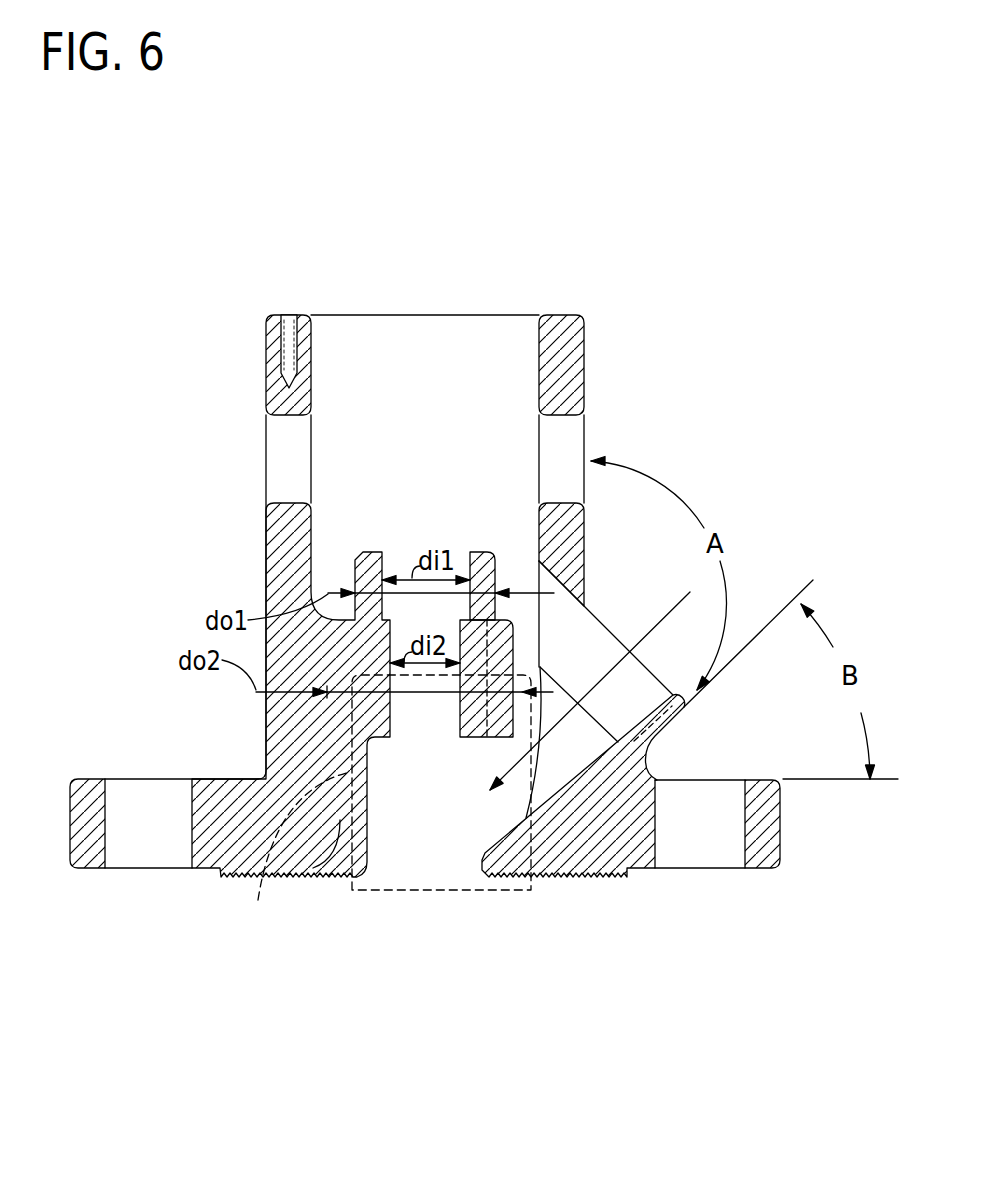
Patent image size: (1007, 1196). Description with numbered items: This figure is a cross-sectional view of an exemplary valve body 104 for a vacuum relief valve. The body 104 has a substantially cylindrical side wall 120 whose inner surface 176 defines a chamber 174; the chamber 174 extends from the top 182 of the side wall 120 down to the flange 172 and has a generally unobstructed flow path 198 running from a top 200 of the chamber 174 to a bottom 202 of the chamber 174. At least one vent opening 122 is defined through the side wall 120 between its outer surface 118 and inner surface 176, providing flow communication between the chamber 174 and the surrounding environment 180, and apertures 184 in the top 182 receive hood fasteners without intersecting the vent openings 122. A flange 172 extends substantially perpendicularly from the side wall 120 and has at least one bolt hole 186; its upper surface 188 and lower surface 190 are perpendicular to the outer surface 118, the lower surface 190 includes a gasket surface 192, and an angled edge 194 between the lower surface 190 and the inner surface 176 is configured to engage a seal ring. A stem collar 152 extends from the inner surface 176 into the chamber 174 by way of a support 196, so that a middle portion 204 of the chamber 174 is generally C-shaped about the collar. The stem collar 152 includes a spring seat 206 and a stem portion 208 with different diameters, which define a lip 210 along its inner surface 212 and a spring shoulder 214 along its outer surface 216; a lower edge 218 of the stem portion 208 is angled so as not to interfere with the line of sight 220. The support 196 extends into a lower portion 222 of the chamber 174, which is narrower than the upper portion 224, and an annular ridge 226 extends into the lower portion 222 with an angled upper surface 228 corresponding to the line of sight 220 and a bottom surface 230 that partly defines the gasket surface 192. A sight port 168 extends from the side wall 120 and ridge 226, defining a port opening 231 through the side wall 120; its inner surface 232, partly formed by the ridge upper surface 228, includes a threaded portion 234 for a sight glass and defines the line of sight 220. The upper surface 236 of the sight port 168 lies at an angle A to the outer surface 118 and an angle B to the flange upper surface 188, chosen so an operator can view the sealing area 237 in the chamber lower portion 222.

The body 104 is at (756, 419).
The outer surface 118 is at (586, 352).
The side wall 120 is at (582, 520).
The vent opening 122 is at (578, 428).
The stem collar 152 is at (580, 548).
The sight port 168 is at (656, 738).
The flange 172 is at (207, 788).
The chamber 174 is at (383, 431).
The inner surface 176 is at (538, 352).
The surrounding environment 180 is at (828, 494).
The top 182 is at (558, 313).
The aperture 184 is at (292, 343).
The bolt hole 186 is at (132, 795).
The upper surface 188 is at (235, 790).
The lower surface 190 is at (208, 878).
The gasket surface 192 is at (577, 878).
The edge 194 is at (358, 880).
The support 196 is at (303, 878).
The flow path 198 is at (518, 536).
The top of chamber 200 is at (430, 313).
The bottom of chamber 202 is at (441, 830).
The middle portion 204 is at (328, 561).
The spring seat 206 is at (363, 556).
The stem portion 208 is at (437, 738).
The lip 210 is at (394, 614).
The inner surface of stem collar 212 is at (394, 550).
The spring shoulder 214 is at (508, 616).
The outer surface of stem collar 216 is at (495, 560).
The lower edge 218 is at (500, 737).
The line of sight 220 is at (681, 605).
The lower portion 222 is at (452, 804).
The upper portion 224 is at (452, 378).
The annular ridge 226 is at (550, 880).
The angled upper surface 228 is at (530, 811).
The bottom surface 230 is at (520, 880).
The port opening 231 is at (565, 727).
The inner surface of sight port 232 is at (649, 709).
The threaded portion 234 is at (674, 716).
The upper surface of sight port 236 is at (697, 708).
The sealing area 237 is at (258, 900).